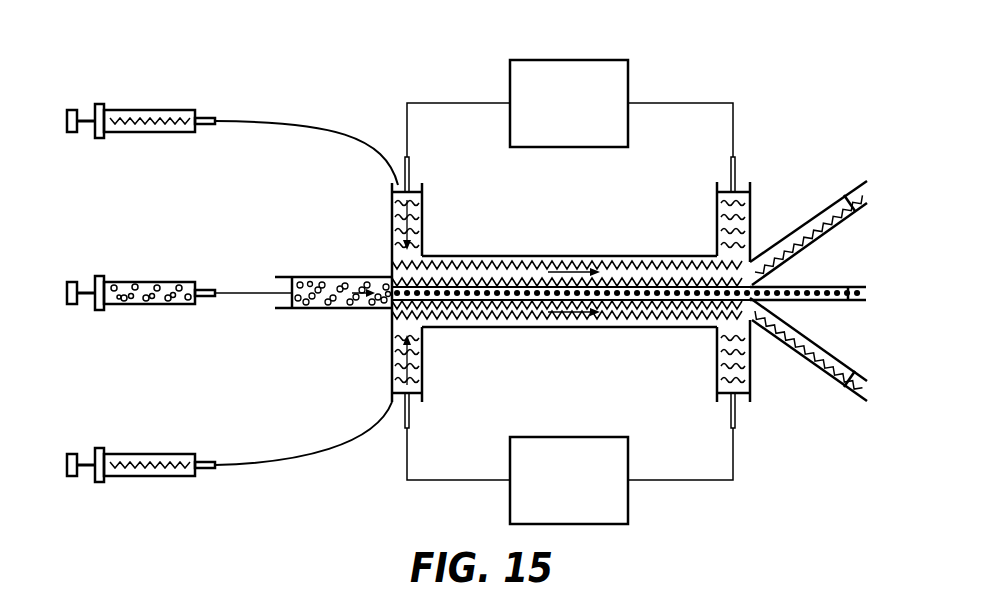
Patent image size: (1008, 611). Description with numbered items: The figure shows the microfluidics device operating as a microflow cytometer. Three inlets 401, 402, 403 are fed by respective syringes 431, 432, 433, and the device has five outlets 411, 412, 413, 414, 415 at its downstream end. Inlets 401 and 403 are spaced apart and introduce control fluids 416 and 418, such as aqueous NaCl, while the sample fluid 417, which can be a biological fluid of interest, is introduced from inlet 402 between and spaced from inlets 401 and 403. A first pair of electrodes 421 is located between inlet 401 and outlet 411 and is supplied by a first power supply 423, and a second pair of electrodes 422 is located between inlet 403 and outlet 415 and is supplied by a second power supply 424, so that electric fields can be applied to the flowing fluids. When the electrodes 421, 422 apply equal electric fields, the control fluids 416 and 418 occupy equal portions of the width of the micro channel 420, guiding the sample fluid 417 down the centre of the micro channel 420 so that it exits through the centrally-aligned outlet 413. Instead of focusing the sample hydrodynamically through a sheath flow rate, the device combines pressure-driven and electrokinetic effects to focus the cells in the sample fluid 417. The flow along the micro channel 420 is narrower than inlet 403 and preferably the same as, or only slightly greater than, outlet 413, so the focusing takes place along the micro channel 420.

The inlet 401 is at (392, 208).
The inlet 402 is at (390, 384).
The inlet 403 is at (302, 277).
The outlet 411 is at (750, 210).
The outlet 412 is at (840, 225).
The outlet 413 is at (837, 300).
The outlet 414 is at (843, 397).
The outlet 415 is at (750, 380).
The control fluid 416 is at (480, 268).
The sample fluid 417 is at (653, 283).
The control fluid 418 is at (482, 318).
The micro channel 420 is at (572, 247).
The first pair of electrodes 421 is at (412, 172).
The second pair of electrodes 422 is at (412, 418).
The first power supply 423 is at (628, 83).
The second power supply 424 is at (628, 500).
The syringe 431 is at (148, 110).
The syringe 432 is at (148, 453).
The syringe 433 is at (148, 281).